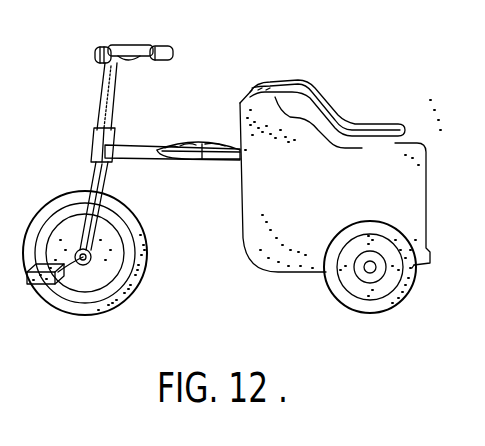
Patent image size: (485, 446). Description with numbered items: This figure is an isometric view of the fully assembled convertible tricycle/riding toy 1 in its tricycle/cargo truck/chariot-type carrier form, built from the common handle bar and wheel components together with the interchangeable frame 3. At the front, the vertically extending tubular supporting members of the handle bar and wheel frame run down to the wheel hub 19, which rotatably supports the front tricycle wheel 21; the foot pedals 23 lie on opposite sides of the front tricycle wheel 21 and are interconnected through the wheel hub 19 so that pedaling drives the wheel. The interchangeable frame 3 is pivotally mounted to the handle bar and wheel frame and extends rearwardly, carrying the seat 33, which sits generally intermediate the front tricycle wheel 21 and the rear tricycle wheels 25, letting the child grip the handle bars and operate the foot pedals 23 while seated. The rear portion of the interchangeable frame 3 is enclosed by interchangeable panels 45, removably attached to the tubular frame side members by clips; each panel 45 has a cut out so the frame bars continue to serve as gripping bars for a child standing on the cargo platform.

The convertible tricycle/riding toy 1 is at (200, 86).
The interchangeable frame 3 is at (231, 195).
The wheel hub 19 is at (86, 265).
The front tricycle wheel 21 is at (127, 297).
The foot pedals 23 is at (53, 284).
The rear tricycle wheels 25 is at (385, 308).
The seat 33 is at (198, 143).
The interchangeable panel 45 is at (306, 154).